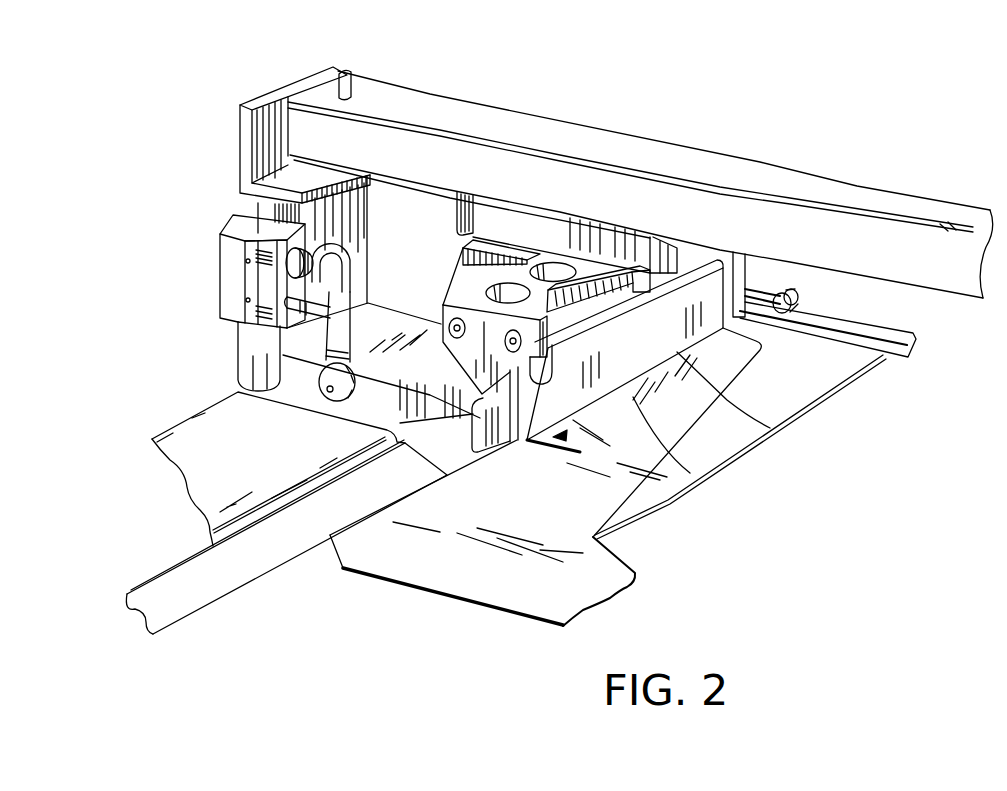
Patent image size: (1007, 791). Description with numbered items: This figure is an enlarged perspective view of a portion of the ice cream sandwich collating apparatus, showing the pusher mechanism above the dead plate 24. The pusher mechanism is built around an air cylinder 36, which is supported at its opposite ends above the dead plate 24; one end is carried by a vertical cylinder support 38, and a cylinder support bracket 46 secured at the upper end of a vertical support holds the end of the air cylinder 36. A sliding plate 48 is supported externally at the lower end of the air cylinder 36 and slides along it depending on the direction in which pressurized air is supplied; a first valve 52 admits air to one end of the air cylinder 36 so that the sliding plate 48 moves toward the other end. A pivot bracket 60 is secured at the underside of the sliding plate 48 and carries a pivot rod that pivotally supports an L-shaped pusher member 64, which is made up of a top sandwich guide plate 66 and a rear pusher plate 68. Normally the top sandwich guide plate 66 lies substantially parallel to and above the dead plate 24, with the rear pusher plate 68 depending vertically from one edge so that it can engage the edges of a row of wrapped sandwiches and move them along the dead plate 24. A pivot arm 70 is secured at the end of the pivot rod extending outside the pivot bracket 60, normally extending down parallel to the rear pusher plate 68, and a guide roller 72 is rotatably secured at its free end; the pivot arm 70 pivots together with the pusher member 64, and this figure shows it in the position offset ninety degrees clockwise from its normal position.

The dead plate 24 is at (497, 598).
The air cylinder 36 is at (677, 157).
The vertical cylinder support 38 is at (360, 232).
The cylinder support bracket 46 is at (240, 165).
The sliding plate 48 is at (545, 217).
The first valve 52 is at (351, 72).
The pivot bracket 60 is at (470, 292).
The L-shaped pusher member 64 is at (521, 444).
The top sandwich guide plate 66 is at (770, 428).
The rear pusher plate 68 is at (690, 473).
The pivot arm 70 is at (763, 293).
The guide roller 72 is at (800, 302).